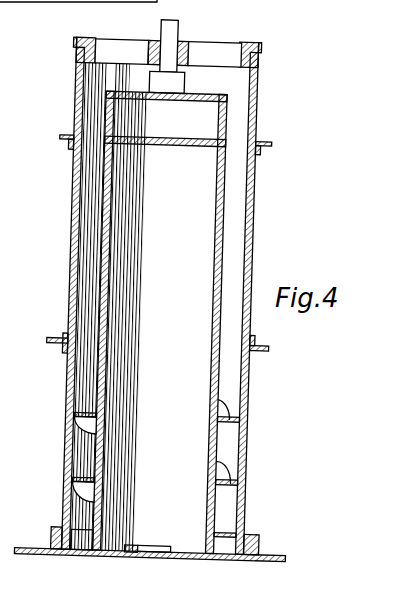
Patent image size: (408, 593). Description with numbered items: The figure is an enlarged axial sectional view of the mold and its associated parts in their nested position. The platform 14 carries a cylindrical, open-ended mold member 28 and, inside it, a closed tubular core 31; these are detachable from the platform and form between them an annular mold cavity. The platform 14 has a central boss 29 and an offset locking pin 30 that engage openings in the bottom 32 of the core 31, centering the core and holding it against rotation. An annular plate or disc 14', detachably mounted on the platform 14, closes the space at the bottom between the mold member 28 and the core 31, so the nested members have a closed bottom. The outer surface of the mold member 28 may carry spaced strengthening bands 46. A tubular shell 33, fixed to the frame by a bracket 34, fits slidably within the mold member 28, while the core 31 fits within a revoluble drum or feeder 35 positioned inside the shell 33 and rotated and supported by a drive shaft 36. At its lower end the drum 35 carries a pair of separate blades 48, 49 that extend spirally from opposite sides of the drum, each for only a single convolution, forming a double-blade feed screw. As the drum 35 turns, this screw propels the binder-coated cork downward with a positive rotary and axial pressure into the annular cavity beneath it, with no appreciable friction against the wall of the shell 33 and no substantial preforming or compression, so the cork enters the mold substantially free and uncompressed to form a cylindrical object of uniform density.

The platform 14 is at (125, 328).
The annular plate or disc 14' is at (86, 325).
The mold member 28 is at (250, 433).
The central boss 29 is at (158, 547).
The offset locking pin 30 is at (137, 547).
The closed tubular core 31 is at (219, 220).
The bottom of core 32 is at (188, 557).
The tubular member or shell 33 is at (258, 107).
The bracket 34 is at (92, 38).
The revoluble drum or feeder 35 is at (228, 124).
The drive shaft 36 is at (172, 33).
The strengthening bands 46 is at (260, 347).
The blade 48 is at (92, 463).
The blade 49 is at (231, 480).